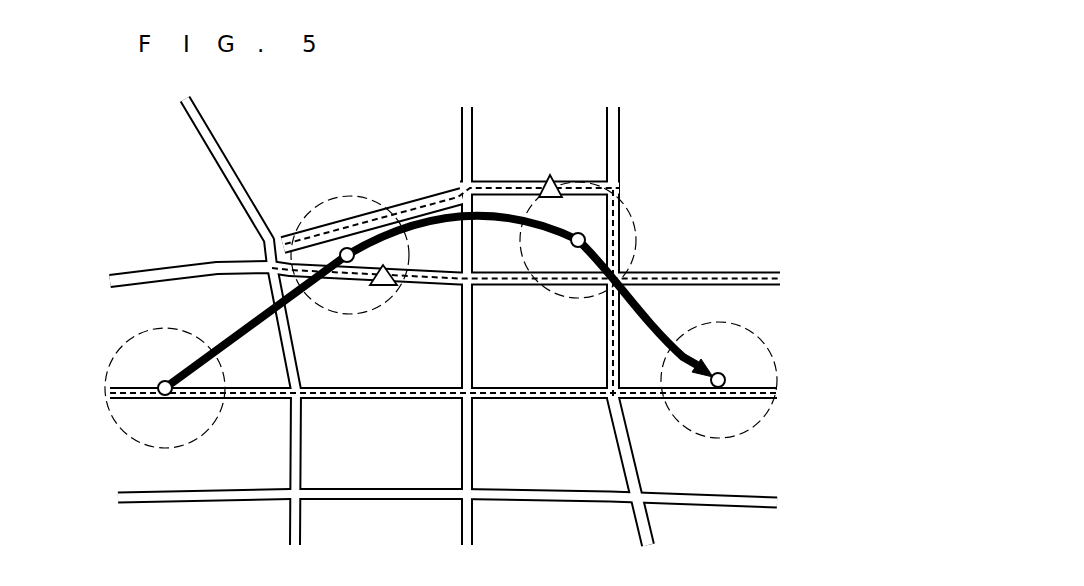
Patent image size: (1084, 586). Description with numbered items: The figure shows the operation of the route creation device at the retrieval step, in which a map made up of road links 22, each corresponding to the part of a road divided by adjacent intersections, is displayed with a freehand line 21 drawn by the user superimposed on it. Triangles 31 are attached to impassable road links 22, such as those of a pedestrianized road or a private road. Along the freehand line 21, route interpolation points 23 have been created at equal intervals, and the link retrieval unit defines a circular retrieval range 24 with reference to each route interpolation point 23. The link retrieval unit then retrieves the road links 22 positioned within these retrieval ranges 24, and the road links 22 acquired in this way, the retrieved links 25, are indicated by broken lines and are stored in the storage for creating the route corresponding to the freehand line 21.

The freehand line 21 is at (641, 318).
The road link 22 is at (210, 124).
The route interpolation point 23 is at (162, 381).
The retrieval range 24 is at (162, 328).
The retrieved link 25 is at (440, 182).
The triangle 31 is at (383, 290).